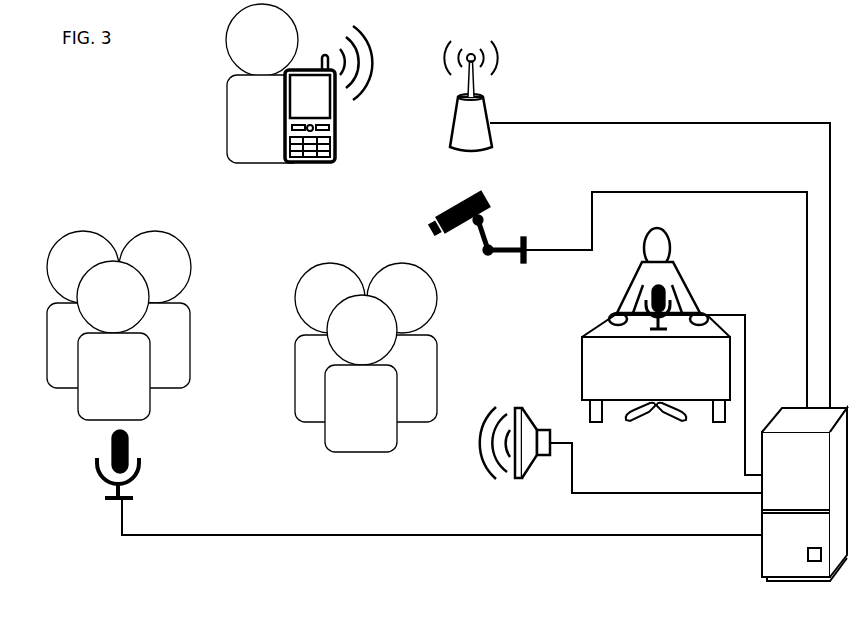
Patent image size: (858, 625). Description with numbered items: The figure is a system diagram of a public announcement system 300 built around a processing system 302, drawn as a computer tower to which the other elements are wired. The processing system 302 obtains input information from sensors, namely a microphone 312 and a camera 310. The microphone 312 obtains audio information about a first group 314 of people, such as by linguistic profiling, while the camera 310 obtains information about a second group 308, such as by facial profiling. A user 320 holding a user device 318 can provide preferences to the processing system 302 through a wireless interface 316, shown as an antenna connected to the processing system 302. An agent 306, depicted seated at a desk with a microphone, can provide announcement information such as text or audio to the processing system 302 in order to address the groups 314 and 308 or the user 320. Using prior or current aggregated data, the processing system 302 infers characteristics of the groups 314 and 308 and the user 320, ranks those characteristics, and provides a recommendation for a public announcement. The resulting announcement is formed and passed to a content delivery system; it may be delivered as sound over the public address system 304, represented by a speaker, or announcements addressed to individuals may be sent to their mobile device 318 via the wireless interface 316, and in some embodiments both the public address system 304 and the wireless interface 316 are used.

The public announcement system 300 is at (782, 76).
The processing system 302 is at (755, 570).
The public address system 304 is at (478, 458).
The agent 306 is at (687, 255).
The group 308 is at (442, 325).
The camera 310 is at (493, 184).
The microphone 312 is at (148, 451).
The group 314 is at (165, 213).
The wireless interface 316 is at (493, 100).
The user device 318 is at (338, 126).
The user 320 is at (218, 129).